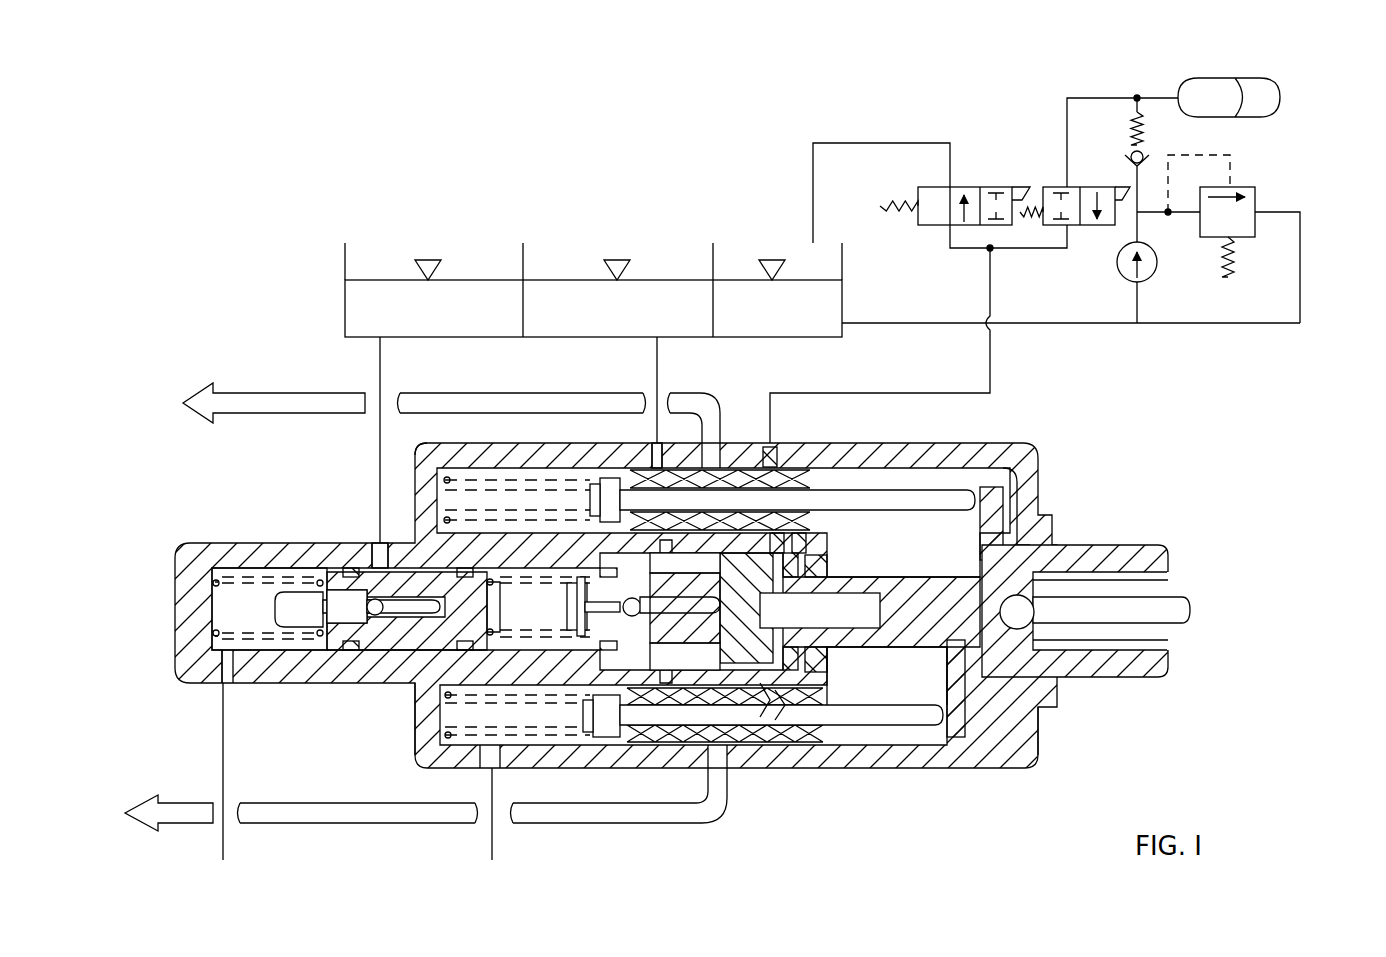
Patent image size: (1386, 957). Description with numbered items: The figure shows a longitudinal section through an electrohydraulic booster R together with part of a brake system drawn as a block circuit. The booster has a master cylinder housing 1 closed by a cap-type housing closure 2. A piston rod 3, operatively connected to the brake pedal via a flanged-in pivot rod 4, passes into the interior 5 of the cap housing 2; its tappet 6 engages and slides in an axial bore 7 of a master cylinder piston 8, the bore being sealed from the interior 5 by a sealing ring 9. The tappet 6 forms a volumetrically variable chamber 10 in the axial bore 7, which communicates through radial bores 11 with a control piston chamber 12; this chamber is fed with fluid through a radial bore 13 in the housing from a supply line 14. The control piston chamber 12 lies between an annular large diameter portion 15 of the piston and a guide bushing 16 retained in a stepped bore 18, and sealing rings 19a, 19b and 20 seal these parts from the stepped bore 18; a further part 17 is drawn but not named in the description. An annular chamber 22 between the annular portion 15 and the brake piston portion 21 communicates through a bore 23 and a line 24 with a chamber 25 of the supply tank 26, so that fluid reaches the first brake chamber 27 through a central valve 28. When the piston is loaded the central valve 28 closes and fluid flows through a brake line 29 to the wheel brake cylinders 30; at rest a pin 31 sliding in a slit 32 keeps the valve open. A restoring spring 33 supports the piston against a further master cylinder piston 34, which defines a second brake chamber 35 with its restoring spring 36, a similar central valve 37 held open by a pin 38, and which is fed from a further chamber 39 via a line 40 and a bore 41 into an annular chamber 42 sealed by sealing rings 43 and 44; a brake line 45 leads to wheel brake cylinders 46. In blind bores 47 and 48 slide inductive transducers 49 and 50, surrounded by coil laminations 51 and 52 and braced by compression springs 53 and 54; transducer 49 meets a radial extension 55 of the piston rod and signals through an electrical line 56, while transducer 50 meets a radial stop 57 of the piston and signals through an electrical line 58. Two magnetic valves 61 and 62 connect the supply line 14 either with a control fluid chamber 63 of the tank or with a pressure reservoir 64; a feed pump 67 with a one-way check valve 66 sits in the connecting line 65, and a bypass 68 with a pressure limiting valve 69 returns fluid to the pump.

The master cylinder housing 1 is at (338, 676).
The cap-type housing closure 2 is at (1042, 452).
The piston rod 3 is at (1108, 556).
The pivot rod 4 is at (1170, 610).
The interior 5 is at (1008, 752).
The tappet 6 is at (875, 705).
The axial bore 7 is at (913, 587).
The master cylinder piston 8 is at (686, 662).
The sealing ring 9 is at (935, 655).
The volumetrically variable chamber 10 is at (775, 612).
The radial bores 11 is at (803, 560).
The control piston chamber 12 is at (786, 553).
The radial bore 13 is at (762, 445).
The supply line 14 is at (930, 393).
The annular large diameter portion 15 is at (765, 700).
The guide bushing 16 is at (832, 565).
The seal 17 is at (810, 555).
The stepped bore 18 is at (493, 556).
The sealing ring 19a is at (812, 662).
The passage 19b is at (790, 705).
The sealing ring 20 is at (737, 690).
The brake piston portion 21 is at (590, 580).
The annular chamber 22 is at (700, 665).
The bore 23 is at (655, 447).
The line 24 is at (660, 380).
The chamber 25 is at (658, 280).
The supply tank 26 is at (343, 302).
The first brake chamber 27 is at (495, 748).
The central valve 28 is at (530, 748).
The brake line 29 is at (492, 840).
The wheel brake cylinders 30 is at (470, 878).
The pin 31 is at (600, 720).
The slit 32 is at (645, 700).
The restoring spring 33 is at (482, 660).
The further master cylinder piston 34 is at (280, 668).
The second brake chamber 35 is at (250, 575).
The restoring spring 36 is at (222, 578).
The central valve 37 is at (296, 605).
The pin 38 is at (372, 596).
The further chamber 39 is at (470, 280).
The line 40 is at (382, 380).
The bore 41 is at (382, 542).
The annular chamber 42 is at (378, 652).
The sealing ring 43 is at (340, 650).
The sealing ring 44 is at (430, 652).
The brake line 45 is at (223, 752).
The wheel brake cylinders 46 is at (207, 880).
The blind bore 47 is at (428, 447).
The blind bore 48 is at (418, 760).
The inductive transducer 49 is at (890, 497).
The inductive transducer 50 is at (850, 718).
The coil lamination 51 is at (782, 445).
The coil lamination 52 is at (782, 710).
The compression spring 53 is at (508, 475).
The compression spring 54 is at (452, 748).
The radial extension 55 is at (996, 520).
The electrical line 56 is at (277, 390).
The radial stop 57 is at (955, 740).
The electrical line 58 is at (153, 834).
The magnetic valve 61 is at (960, 188).
The magnetic valve 62 is at (1058, 188).
The further chamber 63 is at (842, 310).
The pressure reservoir 64 is at (1285, 95).
The connecting line 65 is at (1103, 98).
The one-way check valve 66 is at (1145, 126).
The feed pump 67 is at (1148, 275).
The bypass 68 is at (1300, 282).
The pressure limiting valve 69 is at (1258, 200).
The electrohydraulic booster R is at (1038, 428).